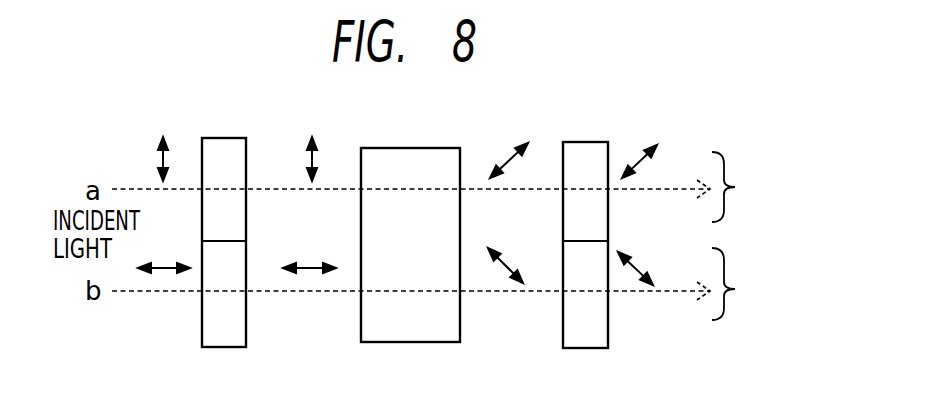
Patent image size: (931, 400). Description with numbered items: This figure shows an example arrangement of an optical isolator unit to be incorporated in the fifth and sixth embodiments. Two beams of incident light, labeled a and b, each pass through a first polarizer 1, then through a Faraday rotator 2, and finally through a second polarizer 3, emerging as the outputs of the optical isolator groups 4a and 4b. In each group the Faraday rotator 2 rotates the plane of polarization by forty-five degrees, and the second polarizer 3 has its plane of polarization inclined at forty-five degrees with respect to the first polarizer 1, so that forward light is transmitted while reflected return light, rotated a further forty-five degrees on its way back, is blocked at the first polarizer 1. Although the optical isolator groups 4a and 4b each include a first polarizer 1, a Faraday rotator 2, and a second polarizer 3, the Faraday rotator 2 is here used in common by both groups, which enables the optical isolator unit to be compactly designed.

The first polarizer 1 is at (246, 141).
The Faraday rotator 2 is at (445, 148).
The second polarizer 3 is at (593, 147).
The optical isolator group 4a is at (742, 187).
The optical isolator group 4b is at (742, 284).